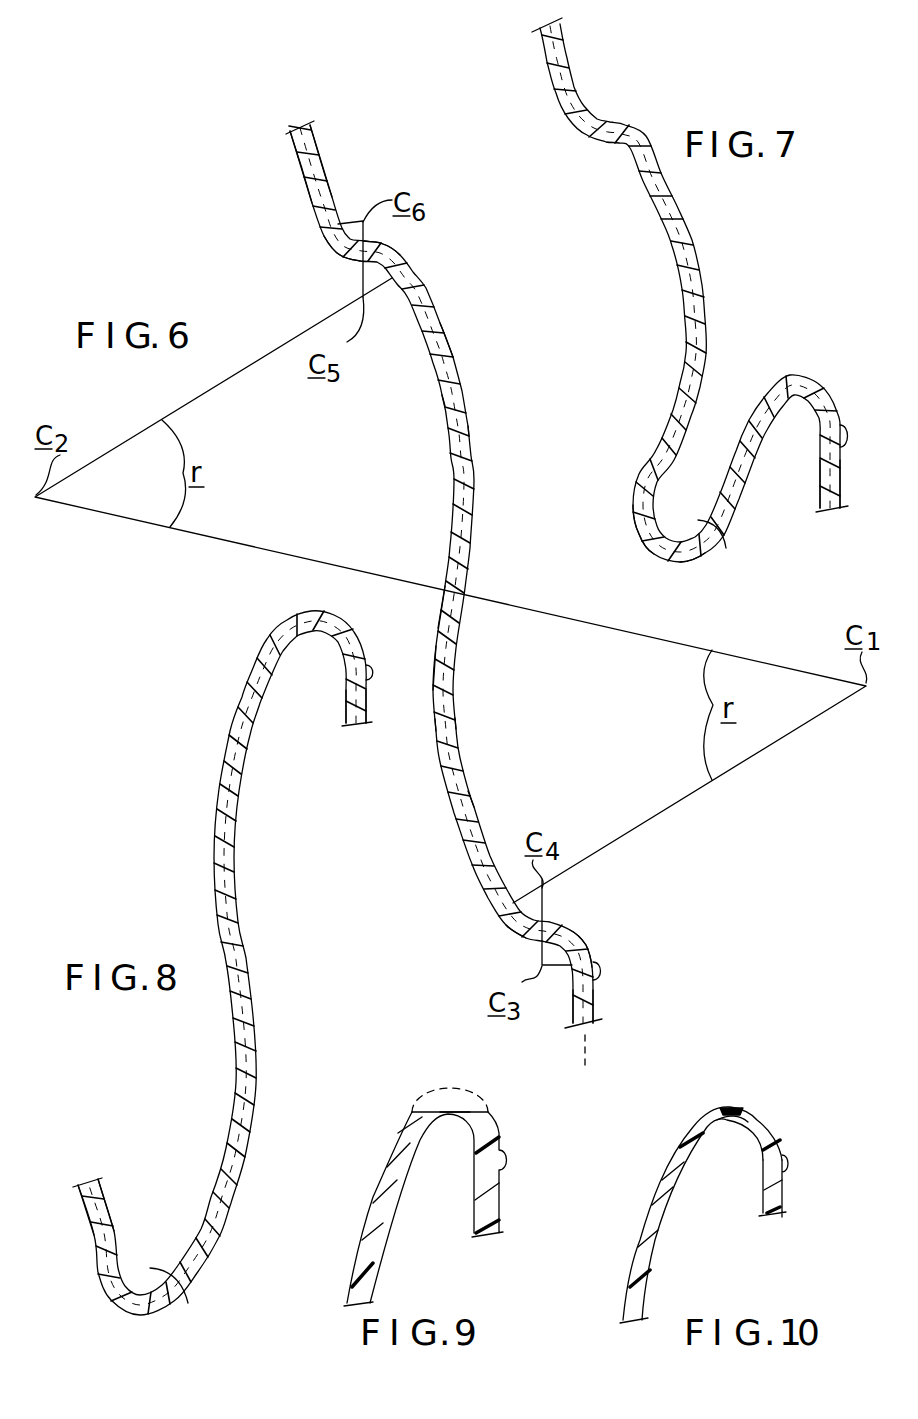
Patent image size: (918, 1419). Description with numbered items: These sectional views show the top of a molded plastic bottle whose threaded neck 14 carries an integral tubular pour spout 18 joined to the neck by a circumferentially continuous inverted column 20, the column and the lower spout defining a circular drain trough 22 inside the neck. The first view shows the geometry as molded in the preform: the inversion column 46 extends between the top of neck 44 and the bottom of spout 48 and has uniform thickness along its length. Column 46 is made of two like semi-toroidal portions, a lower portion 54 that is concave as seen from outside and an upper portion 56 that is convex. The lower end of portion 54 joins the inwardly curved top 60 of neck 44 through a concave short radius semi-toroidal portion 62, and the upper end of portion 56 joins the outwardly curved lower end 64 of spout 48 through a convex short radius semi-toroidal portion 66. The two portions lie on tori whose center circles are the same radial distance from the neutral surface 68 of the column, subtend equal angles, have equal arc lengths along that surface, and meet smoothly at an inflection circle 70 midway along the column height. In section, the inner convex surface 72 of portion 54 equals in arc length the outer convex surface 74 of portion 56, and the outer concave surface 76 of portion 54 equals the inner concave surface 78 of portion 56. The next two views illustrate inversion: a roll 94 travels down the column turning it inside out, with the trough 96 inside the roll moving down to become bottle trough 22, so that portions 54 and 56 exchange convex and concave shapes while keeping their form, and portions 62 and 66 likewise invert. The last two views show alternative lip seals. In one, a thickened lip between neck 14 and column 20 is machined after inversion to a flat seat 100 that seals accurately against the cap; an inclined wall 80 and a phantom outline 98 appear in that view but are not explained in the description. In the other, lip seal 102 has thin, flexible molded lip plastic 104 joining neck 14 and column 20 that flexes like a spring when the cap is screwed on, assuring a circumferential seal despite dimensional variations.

In FIG. 7, the neck 14 is at (841, 480).
In FIG. 8, the neck 14 is at (368, 692).
In FIG. 9, the neck 14 is at (503, 1202).
In FIG. 10, the neck 14 is at (783, 1197).
In FIG. 8, the pour spout 18 is at (98, 1208).
In FIG. 8, the inverted column 20 is at (213, 860).
In FIG. 10, the inverted column 20 is at (658, 1183).
In FIG. 8, the drain trough 22 is at (185, 1285).
In FIG. 6, the preform neck 44 is at (594, 995).
In FIG. 6, the inversion column 46 is at (475, 440).
In FIG. 6, the spout 48 is at (321, 165).
In FIG. 6, the lower semi-toroidal portion 54 is at (466, 748).
In FIG. 6, the upper semi-toroidal portion 56 is at (443, 420).
In FIG. 6, the inwardly curved top of neck 60 is at (567, 927).
In FIG. 6, the concave short radius semi-toroidal portion 62 is at (520, 938).
In FIG. 6, the outwardly curved lower end of spout 64 is at (338, 257).
In FIG. 6, the convex short radius semi-toroidal portion 66 is at (394, 243).
In FIG. 6, the neutral surface 68 is at (454, 633).
In FIG. 7, the neutral surface 68 is at (706, 259).
In FIG. 6, the inflection circle 70 is at (455, 592).
In FIG. 6, the inner convex surface 72 is at (444, 763).
In FIG. 6, the outer convex surface 74 is at (459, 373).
In FIG. 6, the outer concave surface 76 is at (476, 813).
In FIG. 6, the inner concave surface 78 is at (453, 453).
In FIG. 9, the inclined leg 80 is at (373, 1198).
In FIG. 7, the roll 94 is at (673, 556).
In FIG. 7, the trough 96 is at (713, 541).
In FIG. 9, the phantom rounded top 98 is at (447, 1090).
In FIG. 9, the flat seat 100 is at (455, 1112).
In FIG. 10, the lip seal 102 is at (727, 1100).
In FIG. 10, the molded lip plastic 104 is at (730, 1115).